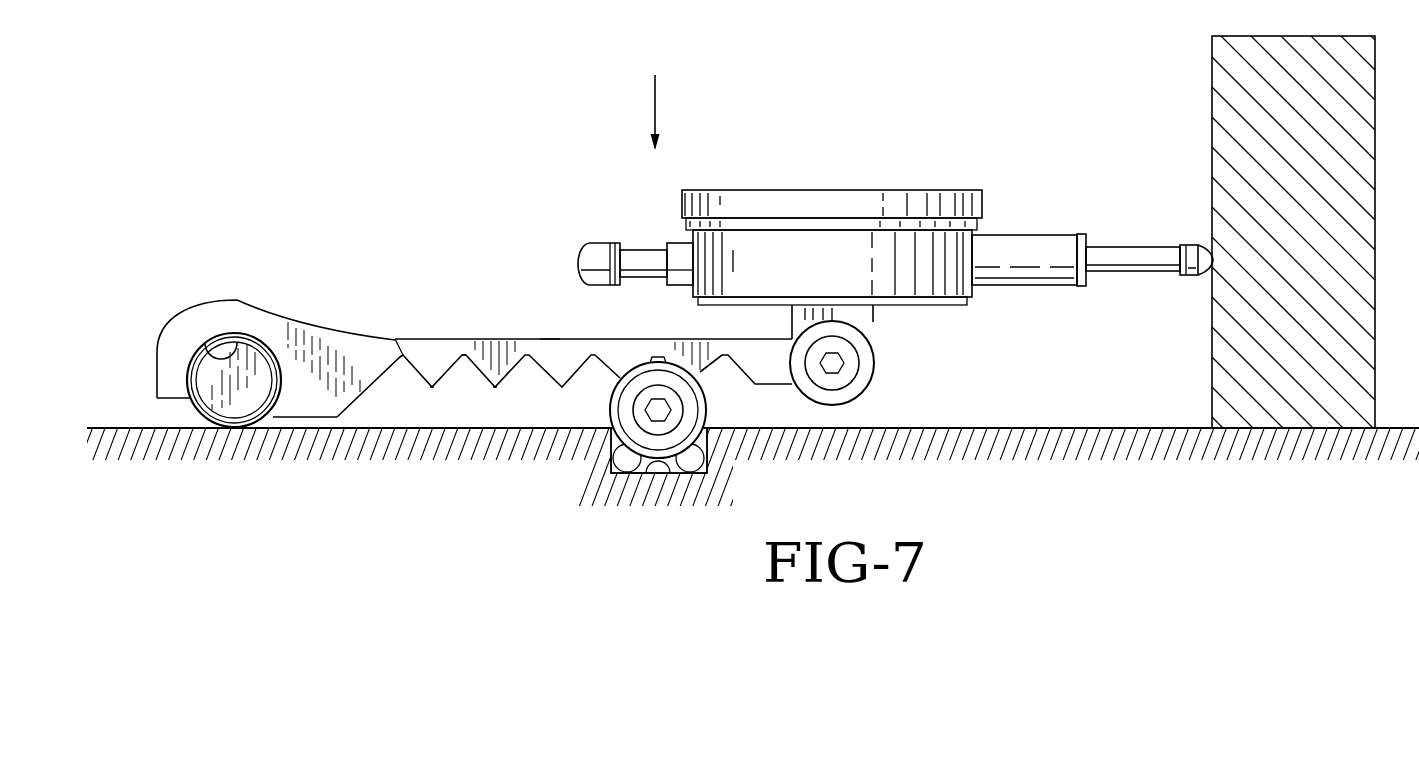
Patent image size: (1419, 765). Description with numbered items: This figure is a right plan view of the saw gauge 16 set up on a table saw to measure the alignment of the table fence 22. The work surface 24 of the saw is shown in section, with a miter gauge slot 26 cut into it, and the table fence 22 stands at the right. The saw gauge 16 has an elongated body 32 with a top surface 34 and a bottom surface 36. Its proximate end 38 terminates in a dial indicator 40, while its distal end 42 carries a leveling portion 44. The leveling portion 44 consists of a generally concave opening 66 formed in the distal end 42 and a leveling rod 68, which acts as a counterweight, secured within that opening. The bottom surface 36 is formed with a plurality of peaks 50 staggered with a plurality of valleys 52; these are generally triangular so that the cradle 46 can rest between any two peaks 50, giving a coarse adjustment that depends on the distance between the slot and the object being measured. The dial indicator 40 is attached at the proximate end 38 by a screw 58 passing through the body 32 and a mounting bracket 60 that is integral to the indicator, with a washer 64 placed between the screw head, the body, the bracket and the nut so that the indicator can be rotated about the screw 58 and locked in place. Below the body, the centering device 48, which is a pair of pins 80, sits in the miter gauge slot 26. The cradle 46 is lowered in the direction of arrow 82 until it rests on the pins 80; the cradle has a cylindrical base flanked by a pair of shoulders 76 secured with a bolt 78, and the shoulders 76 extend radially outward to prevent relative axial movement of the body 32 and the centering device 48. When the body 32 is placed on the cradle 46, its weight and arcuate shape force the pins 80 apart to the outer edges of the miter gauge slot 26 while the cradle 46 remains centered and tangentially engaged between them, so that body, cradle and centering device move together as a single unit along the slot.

The saw gauge 16 is at (550, 335).
The table fence 22 is at (1220, 113).
The work surface 24 is at (1077, 427).
The miter gauge slot 26 is at (653, 474).
The body 32 is at (437, 334).
The top surface 34 is at (503, 337).
The bottom surface 36 is at (379, 381).
The proximate end 38 is at (873, 370).
The dial indicator 40 is at (868, 184).
The distal end 42 is at (155, 382).
The leveling portion 44 is at (265, 357).
The cradle 46 is at (606, 405).
The centering device 48 is at (710, 466).
The peaks 50 is at (432, 389).
The valleys 52 is at (400, 356).
The screw 58 is at (847, 352).
The mounting bracket 60 is at (868, 324).
The washer 64 is at (855, 388).
The concave opening 66 is at (233, 340).
The leveling rod 68 is at (210, 372).
The shoulders 76 is at (633, 370).
The bolt 78 is at (678, 407).
The pins 80 is at (627, 467).
The arrow 82 is at (655, 104).